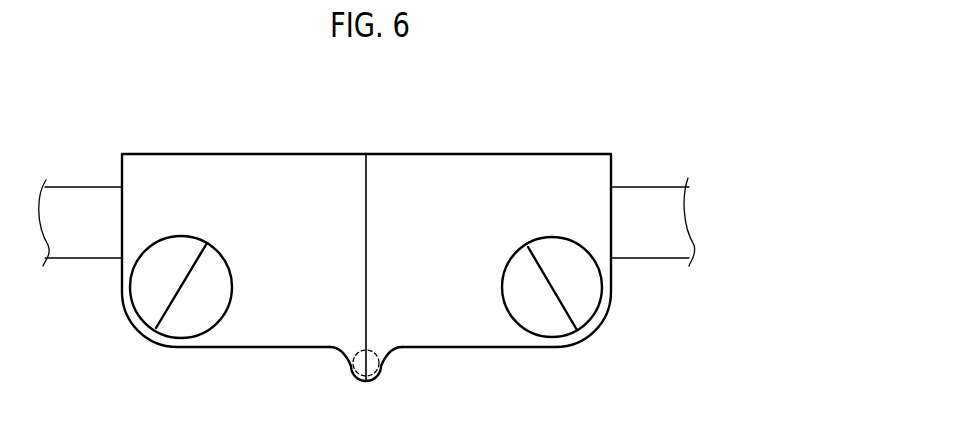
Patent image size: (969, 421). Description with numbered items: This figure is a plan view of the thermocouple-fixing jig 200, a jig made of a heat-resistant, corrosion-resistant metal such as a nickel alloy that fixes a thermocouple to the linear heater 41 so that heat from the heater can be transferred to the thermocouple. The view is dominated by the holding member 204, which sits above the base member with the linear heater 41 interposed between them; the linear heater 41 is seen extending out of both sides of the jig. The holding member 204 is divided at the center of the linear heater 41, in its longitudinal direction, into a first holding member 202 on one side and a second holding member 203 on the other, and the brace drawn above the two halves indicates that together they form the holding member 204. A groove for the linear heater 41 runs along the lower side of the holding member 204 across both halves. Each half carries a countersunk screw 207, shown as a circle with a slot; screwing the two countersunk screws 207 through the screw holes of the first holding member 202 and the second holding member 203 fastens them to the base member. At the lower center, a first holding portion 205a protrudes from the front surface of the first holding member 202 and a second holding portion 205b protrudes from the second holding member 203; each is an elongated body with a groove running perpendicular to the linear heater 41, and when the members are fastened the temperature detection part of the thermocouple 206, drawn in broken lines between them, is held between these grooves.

The thermocouple-fixing jig 200 is at (650, 108).
The linear heater 41 is at (647, 259).
The first holding member 202 is at (305, 153).
The second holding member 203 is at (425, 153).
The holding member 204 is at (428, 102).
The first holding portion 205a is at (341, 356).
The second holding portion 205b is at (391, 355).
The thermocouple 206 is at (393, 372).
The countersunk screw 207 is at (134, 314).